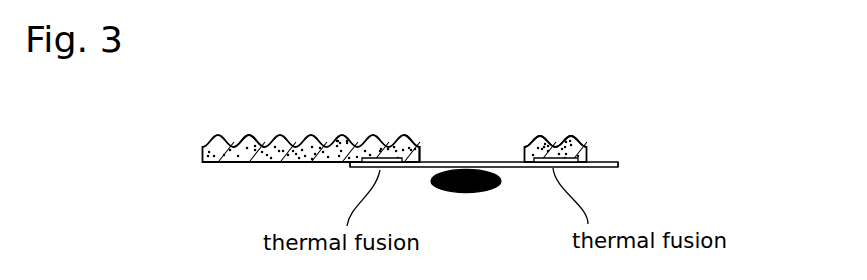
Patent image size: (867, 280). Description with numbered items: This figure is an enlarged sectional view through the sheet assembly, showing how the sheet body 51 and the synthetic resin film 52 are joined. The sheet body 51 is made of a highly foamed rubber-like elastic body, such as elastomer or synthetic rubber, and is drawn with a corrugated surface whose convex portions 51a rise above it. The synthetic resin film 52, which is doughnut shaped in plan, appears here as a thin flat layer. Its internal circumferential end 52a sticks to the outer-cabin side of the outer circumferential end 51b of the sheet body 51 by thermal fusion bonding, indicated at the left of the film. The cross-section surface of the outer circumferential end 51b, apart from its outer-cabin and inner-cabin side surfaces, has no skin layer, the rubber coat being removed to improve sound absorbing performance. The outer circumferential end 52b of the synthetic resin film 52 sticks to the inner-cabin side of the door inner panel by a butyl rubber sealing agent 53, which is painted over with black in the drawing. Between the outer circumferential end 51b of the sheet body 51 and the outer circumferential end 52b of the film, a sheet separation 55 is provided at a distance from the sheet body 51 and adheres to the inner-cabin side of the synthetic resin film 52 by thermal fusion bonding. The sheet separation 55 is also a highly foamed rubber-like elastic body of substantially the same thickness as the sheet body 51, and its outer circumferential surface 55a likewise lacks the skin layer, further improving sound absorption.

The sheet body 51 is at (300, 147).
The convex portion of first sheet 51a is at (250, 135).
The outer circumferential end of the sheet body 51b is at (421, 146).
The synthetic resin film 52 is at (508, 168).
The internal circumferential end of the synthetic resin film 52a is at (352, 165).
The outer circumferential end of the synthetic resin film 52b is at (620, 167).
The butyl rubber sealing agent 53 is at (467, 193).
The sheet separation 55 is at (562, 144).
The outer circumferential surface of the sheet separation 55a is at (530, 147).